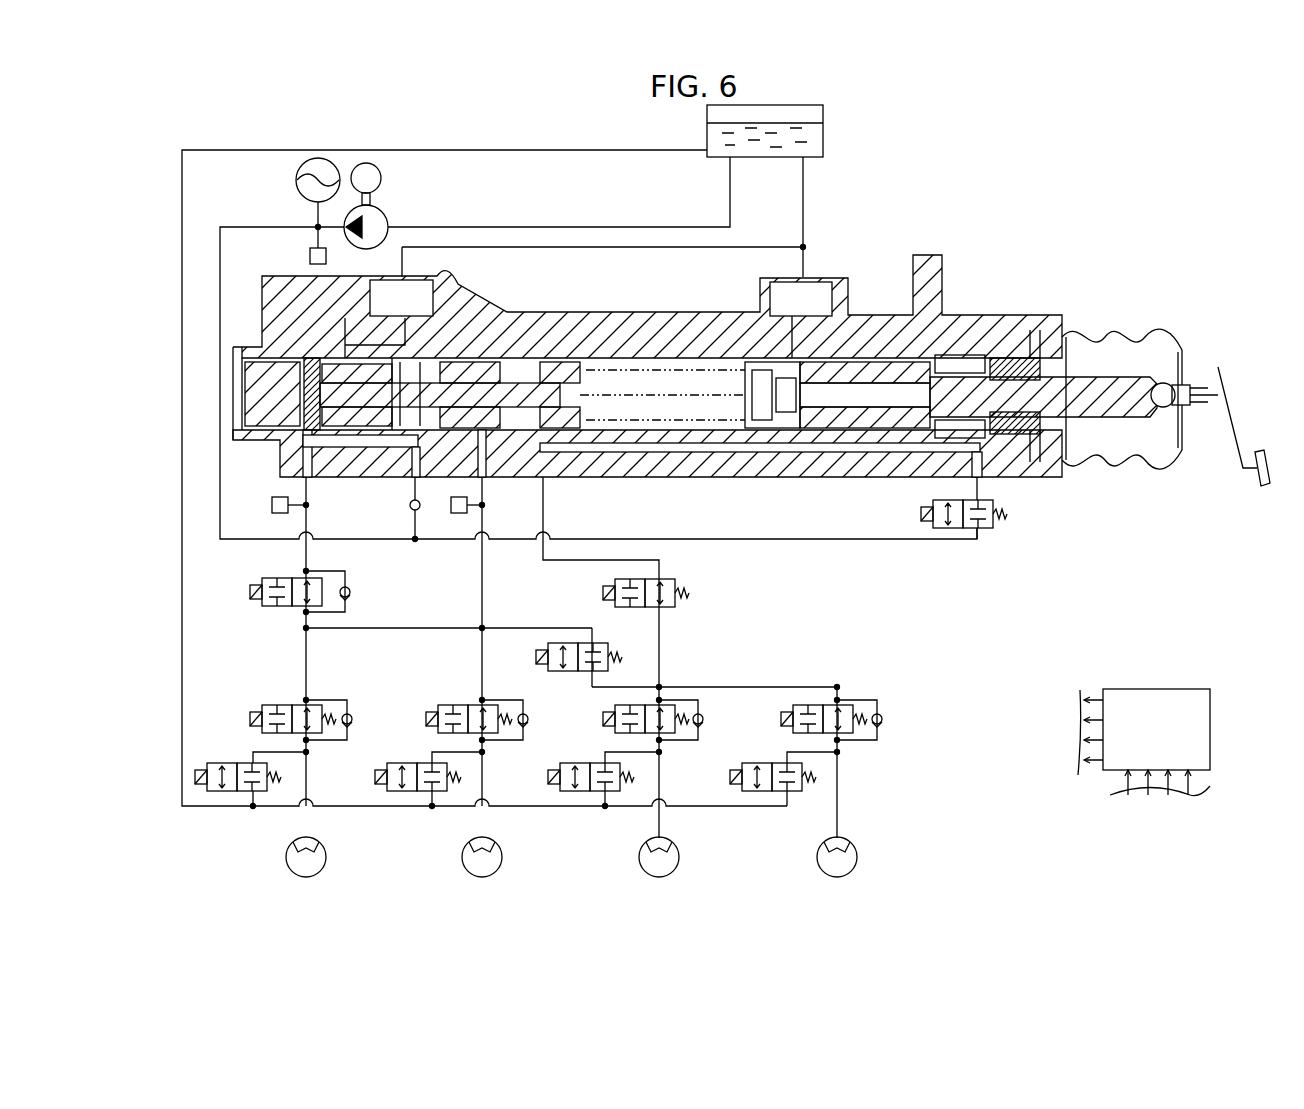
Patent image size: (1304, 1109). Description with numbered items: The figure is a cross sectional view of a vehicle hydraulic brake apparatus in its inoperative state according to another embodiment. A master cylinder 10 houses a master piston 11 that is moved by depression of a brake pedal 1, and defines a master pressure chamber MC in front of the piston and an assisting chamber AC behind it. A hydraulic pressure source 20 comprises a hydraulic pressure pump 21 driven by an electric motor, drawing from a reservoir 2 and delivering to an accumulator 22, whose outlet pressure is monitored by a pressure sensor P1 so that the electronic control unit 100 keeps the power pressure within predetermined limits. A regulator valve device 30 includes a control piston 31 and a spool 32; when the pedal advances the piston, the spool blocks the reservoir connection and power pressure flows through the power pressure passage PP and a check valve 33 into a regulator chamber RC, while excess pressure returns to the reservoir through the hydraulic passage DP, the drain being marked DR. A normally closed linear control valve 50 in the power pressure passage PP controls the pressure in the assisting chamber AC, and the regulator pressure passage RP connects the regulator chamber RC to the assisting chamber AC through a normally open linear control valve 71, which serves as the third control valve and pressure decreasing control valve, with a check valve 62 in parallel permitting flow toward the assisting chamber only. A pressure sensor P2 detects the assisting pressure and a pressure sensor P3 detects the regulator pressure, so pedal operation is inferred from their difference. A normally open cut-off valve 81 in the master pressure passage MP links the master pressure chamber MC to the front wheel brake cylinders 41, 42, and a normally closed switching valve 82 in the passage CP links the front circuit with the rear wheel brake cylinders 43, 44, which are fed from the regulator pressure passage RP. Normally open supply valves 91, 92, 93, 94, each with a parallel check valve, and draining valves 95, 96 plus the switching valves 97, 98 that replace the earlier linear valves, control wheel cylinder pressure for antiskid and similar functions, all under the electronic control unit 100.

The brake pedal 1 is at (1243, 423).
The reservoir 2 is at (823, 135).
The master cylinder 10 is at (857, 345).
The master piston 11 is at (878, 345).
The hydraulic pressure source 20 is at (444, 216).
The hydraulic pressure pump 21 is at (386, 206).
The accumulator 22 is at (296, 170).
The regulator valve device 30 is at (441, 352).
The control piston 31 is at (576, 318).
The spool 32 is at (417, 363).
The check valve 33 is at (410, 508).
The wheel brake cylinder 41 is at (853, 843).
The wheel brake cylinder 42 is at (675, 843).
The wheel brake cylinder 43 is at (498, 843).
The wheel brake cylinder 44 is at (322, 843).
The linear control valve 50 is at (985, 530).
The check valve 62 is at (352, 592).
The linear control valve 71 is at (280, 578).
The electromagnetic switching valve 81 is at (662, 607).
The electromagnetic switching valve 82 is at (562, 671).
The electromagnetic switching valve 91 is at (794, 706).
The electromagnetic switching valve 92 is at (616, 706).
The electromagnetic switching valve 93 is at (440, 706).
The electromagnetic switching valve 94 is at (264, 706).
The electromagnetic switching valve 95 is at (746, 764).
The electromagnetic switching valve 96 is at (564, 763).
The electromagnetic switching valve 97 is at (404, 763).
The electromagnetic switching valve 98 is at (243, 763).
The electronic control unit 100 is at (1150, 689).
The drain passage DR is at (468, 151).
The hydraulic passage DP is at (803, 212).
The power pressure passage PP is at (220, 277).
The regulator pressure passage RP is at (306, 530).
The master pressure chamber MC is at (658, 405).
The master pressure passage MP is at (662, 565).
The passage CP is at (538, 628).
The assisting chamber AC is at (998, 465).
The regulator chamber RC is at (510, 320).
The pressure sensor P1 is at (310, 256).
The pressure sensor P2 is at (455, 500).
The pressure sensor P3 is at (273, 498).